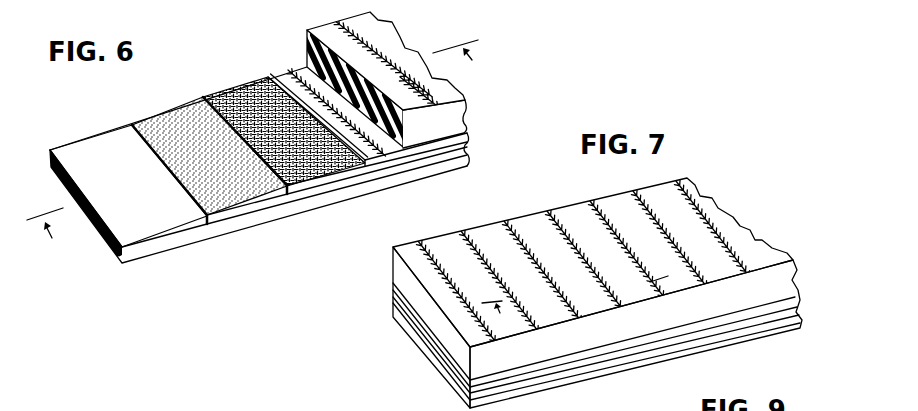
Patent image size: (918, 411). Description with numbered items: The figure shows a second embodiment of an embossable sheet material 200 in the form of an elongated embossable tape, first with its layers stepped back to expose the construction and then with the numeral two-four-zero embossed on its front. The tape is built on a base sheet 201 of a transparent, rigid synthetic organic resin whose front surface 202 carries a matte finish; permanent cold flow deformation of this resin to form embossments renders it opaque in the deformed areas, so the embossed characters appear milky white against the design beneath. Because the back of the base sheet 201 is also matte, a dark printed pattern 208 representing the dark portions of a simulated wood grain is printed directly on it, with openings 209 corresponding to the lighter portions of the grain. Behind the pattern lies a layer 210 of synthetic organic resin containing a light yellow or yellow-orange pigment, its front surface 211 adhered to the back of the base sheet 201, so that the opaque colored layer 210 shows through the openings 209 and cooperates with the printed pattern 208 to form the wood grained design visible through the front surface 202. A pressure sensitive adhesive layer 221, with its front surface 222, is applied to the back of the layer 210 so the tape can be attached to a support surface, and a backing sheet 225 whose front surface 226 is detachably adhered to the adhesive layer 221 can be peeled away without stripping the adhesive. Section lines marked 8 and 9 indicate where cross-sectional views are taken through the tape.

In FIG. 6, the embossable sheet material 200 is at (216, 86).
In FIG. 7, the embossable sheet material 200 is at (812, 202).
In FIG. 6, the base sheet 201 is at (453, 121).
In FIG. 7, the base sheet 201 is at (400, 265).
In FIG. 6, the front surface 202 is at (407, 73).
In FIG. 6, the printed pattern 208 is at (289, 76).
In FIG. 7, the printed pattern 208 is at (562, 224).
In FIG. 6, the openings 209 is at (296, 67).
In FIG. 7, the openings 209 is at (620, 205).
In FIG. 6, the layer 210 is at (338, 163).
In FIG. 7, the layer 210 is at (410, 317).
In FIG. 6, the front surface 211 is at (300, 148).
In FIG. 6, the pressure sensitive adhesive layer 221 is at (255, 191).
In FIG. 7, the pressure sensitive adhesive layer 221 is at (425, 343).
In FIG. 6, the front surface 222 is at (227, 170).
In FIG. 6, the backing sheet 225 is at (92, 132).
In FIG. 7, the backing sheet 225 is at (450, 383).
In FIG. 6, the front surface 226 is at (152, 208).
In FIG. 6, the section line 8- 8 is at (257, 148).
In FIG. 7, the section line 9- 9 is at (575, 303).